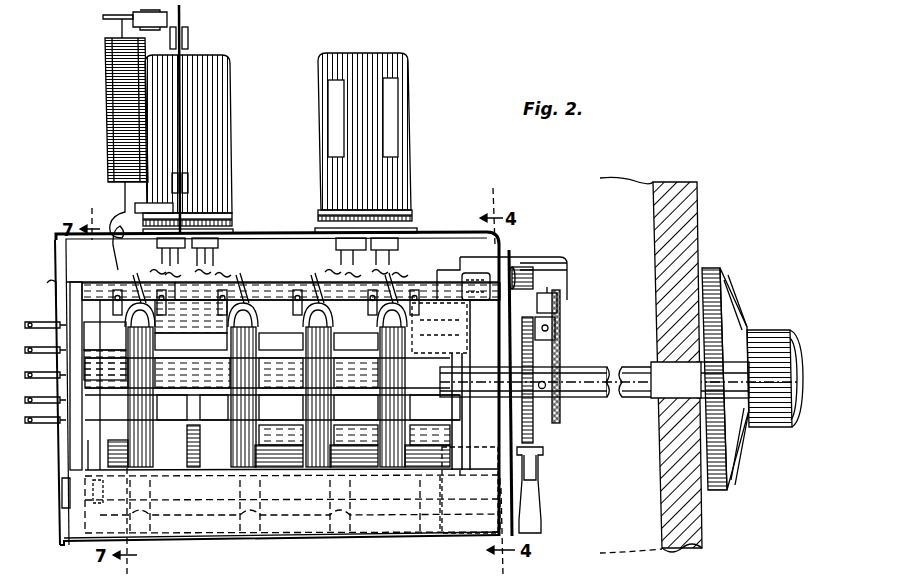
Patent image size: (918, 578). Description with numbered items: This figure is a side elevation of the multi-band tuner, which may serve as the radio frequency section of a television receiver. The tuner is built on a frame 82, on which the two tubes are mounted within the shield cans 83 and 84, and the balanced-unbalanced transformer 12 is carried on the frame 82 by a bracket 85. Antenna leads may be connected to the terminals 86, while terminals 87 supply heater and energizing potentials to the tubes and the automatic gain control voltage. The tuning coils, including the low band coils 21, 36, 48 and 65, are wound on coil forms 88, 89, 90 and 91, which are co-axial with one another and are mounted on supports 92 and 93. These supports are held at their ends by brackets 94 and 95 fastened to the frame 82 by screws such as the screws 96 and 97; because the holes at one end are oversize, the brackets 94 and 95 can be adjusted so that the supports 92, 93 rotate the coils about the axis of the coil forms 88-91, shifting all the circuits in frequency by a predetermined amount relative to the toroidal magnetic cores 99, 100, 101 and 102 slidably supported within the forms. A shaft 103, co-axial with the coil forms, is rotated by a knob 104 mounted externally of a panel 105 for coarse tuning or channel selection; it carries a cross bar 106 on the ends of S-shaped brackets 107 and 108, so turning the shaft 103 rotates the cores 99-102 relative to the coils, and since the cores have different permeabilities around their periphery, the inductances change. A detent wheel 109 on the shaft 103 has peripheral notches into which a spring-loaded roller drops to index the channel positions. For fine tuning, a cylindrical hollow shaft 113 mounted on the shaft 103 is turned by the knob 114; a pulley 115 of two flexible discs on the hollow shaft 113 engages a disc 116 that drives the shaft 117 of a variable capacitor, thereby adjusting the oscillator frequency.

The balanced-unbalanced transformer 12 is at (107, 110).
The terminals 86 is at (103, 16).
The bracket 85 is at (183, 21).
The shield can 83 is at (230, 113).
The shield can 84 is at (404, 110).
The frame 82 is at (467, 232).
The screw 97 is at (514, 267).
The screw 96 is at (47, 283).
The terminals 87 is at (40, 420).
The bracket 94 is at (100, 318).
The low band coil 21 is at (191, 316).
The support 92 is at (203, 340).
The low band coil 36 is at (281, 330).
The low band coil 48 is at (356, 330).
The low band coil 65 is at (410, 313).
The disc 116 is at (557, 305).
The shaft 117 is at (557, 320).
The cylindrical hollow shaft 113 is at (573, 368).
The shaft 103 is at (610, 368).
The panel 105 is at (698, 222).
The knob 114 is at (728, 283).
The knob 104 is at (766, 330).
The toroidal magnetic core 99 is at (143, 378).
The toroidal magnetic core 100 is at (240, 370).
The toroidal magnetic core 101 is at (320, 370).
The toroidal magnetic core 102 is at (395, 370).
The coil form 88 is at (172, 408).
The support 93 is at (213, 408).
The coil form 89 is at (258, 412).
The coil form 90 is at (333, 412).
The coil form 91 is at (408, 412).
The pulley 115 is at (570, 412).
The detent wheel 109 is at (533, 432).
The S-shaped bracket 107 is at (65, 485).
The cross bar 106 is at (120, 508).
The S-shaped bracket 108 is at (463, 468).
The bracket 95 is at (475, 455).